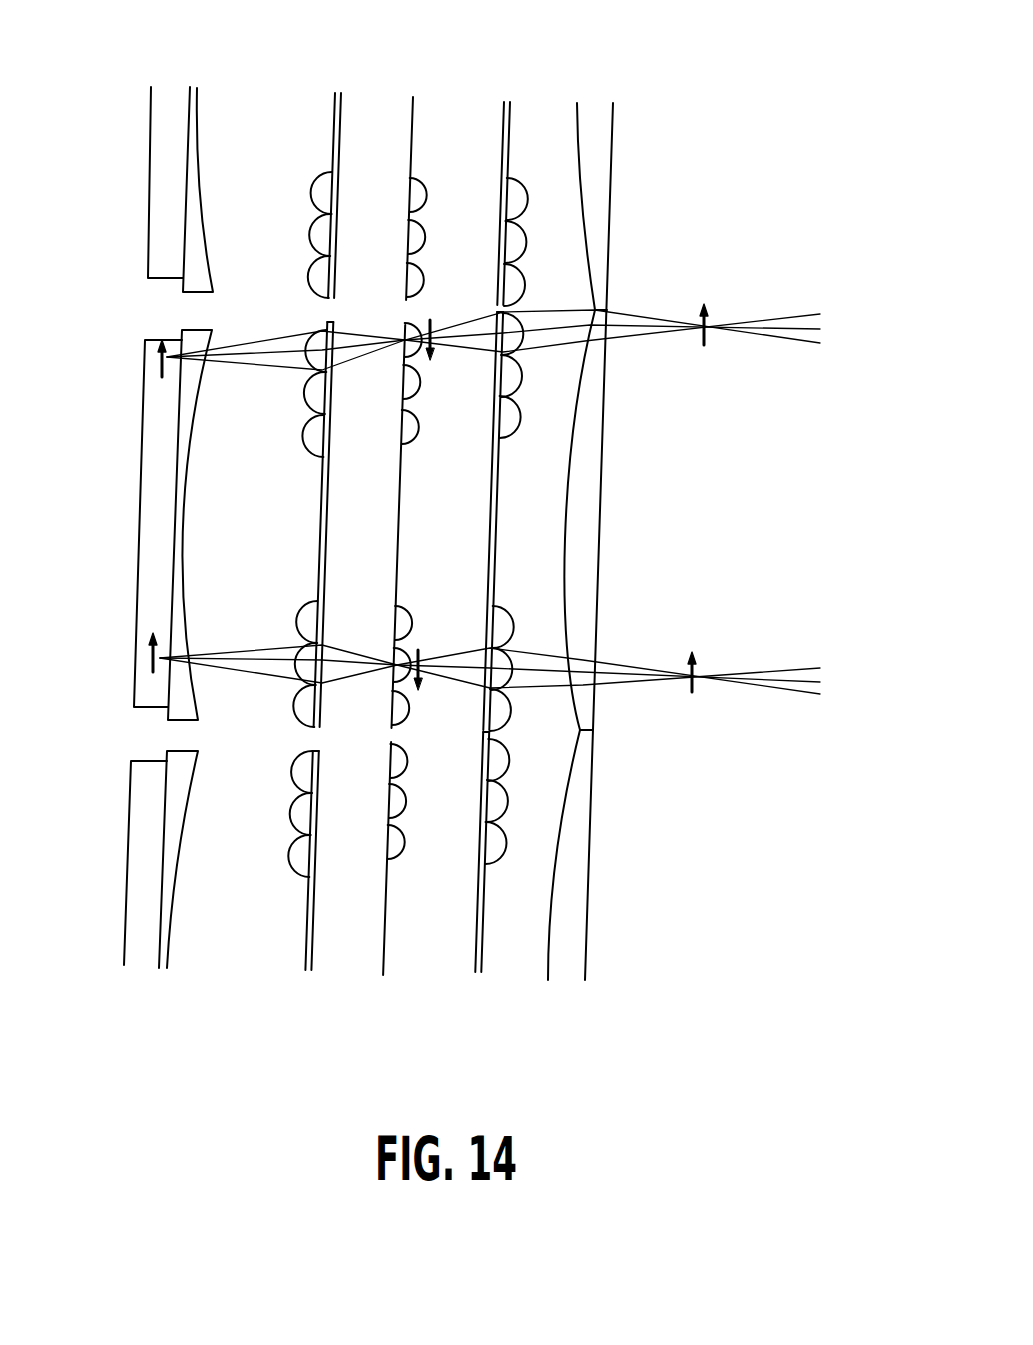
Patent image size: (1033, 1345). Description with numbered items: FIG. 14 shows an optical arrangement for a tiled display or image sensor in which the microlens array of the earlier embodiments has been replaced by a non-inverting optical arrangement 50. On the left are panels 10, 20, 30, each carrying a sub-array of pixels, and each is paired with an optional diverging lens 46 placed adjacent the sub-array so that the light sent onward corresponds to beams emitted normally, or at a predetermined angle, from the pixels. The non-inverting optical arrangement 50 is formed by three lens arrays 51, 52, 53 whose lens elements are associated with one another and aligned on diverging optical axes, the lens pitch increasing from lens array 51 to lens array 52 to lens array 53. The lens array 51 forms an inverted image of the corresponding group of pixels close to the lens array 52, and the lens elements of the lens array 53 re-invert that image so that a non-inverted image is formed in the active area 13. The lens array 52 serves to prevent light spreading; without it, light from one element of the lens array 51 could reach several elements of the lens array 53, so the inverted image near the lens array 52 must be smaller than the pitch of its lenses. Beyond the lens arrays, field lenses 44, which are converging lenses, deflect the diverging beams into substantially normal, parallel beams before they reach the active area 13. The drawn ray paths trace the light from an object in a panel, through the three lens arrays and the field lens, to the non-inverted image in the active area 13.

The panel 10 is at (165, 232).
The second light source / object plane element 20 is at (155, 568).
The third light source / object plane element 30 is at (145, 840).
The diverging lens 46 is at (182, 527).
The field lens 44 is at (588, 478).
The non-inverting optical arrangement 50 is at (507, 60).
The lens array 51 is at (305, 988).
The lens array 52 is at (388, 991).
The lens array 53 is at (480, 993).
The active area 13 is at (890, 77).